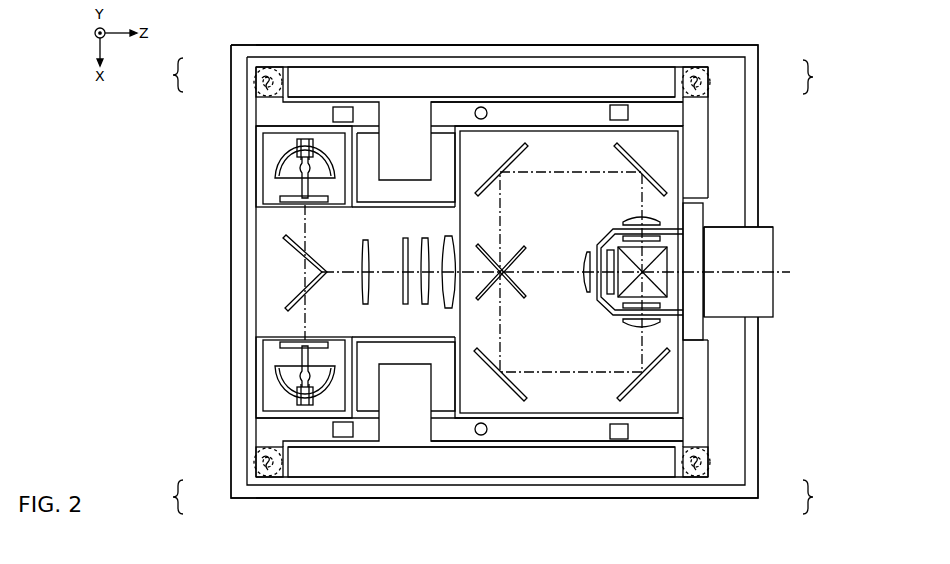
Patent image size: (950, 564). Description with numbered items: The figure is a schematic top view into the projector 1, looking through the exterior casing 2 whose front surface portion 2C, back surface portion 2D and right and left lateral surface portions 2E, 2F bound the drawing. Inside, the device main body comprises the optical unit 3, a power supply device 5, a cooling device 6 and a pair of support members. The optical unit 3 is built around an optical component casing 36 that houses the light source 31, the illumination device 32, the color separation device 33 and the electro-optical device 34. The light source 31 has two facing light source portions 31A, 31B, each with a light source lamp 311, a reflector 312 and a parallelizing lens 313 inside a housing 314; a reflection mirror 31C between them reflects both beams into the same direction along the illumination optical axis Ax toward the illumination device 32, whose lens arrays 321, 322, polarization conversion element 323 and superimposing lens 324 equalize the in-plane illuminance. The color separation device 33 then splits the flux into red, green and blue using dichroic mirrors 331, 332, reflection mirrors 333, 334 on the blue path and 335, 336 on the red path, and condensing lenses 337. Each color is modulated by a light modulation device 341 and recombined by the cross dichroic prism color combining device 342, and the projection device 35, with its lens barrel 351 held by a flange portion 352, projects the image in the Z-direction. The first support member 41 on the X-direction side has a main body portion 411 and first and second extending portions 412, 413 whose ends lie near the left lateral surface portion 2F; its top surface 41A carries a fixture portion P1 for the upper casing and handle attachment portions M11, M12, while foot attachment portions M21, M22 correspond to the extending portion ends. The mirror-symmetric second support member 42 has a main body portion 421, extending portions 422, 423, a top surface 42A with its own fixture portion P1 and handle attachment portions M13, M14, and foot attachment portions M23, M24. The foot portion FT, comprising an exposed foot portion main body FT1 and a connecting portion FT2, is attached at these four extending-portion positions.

The projector 1 is at (798, 36).
The exterior casing 2 is at (758, 148).
The front surface portion 2C is at (745, 165).
The back surface portion 2D is at (256, 150).
The right lateral surface portion 2E is at (583, 45).
The left lateral surface portion 2F is at (575, 500).
The optical unit 3 is at (690, 375).
The power supply device 5 is at (405, 67).
The cooling device 6 is at (405, 477).
The light source 31 is at (270, 251).
The light source portion 31A is at (186, 168).
The light source portion 31B is at (186, 308).
The reflection mirror 31C is at (284, 270).
The light source lamp 311 is at (280, 185).
The reflector 312 is at (280, 162).
The parallelizing lens 313 is at (283, 200).
The housing 314 is at (290, 218).
The illumination device 32 is at (358, 311).
The lens array 321 is at (365, 240).
The lens array 322 is at (405, 238).
The polarization conversion element 323 is at (435, 229).
The superimposing lens 324 is at (449, 236).
The color separation device 33 is at (572, 145).
The dichroic mirror 331 is at (510, 296).
The dichroic mirror 332 is at (501, 240).
The reflection mirror 333 is at (510, 392).
The reflection mirror 334 is at (630, 392).
The reflection mirror 335 is at (510, 158).
The reflection mirror 336 is at (632, 155).
The condensing lens 337 is at (637, 214).
The electro-optical device 34 is at (676, 300).
The light modulation device 341 is at (623, 238).
The color combining device 342 is at (690, 282).
The projection device 35 is at (827, 224).
The lens barrel 351 is at (770, 232).
The flange portion 352 is at (700, 255).
The optical component casing 36 is at (690, 170).
The first support member 41 is at (440, 440).
The main body portion 411 is at (508, 440).
The top surface 41A is at (548, 440).
The first extending portion 412 is at (690, 478).
The second extending portion 413 is at (268, 477).
The second support member 42 is at (440, 106).
The main body portion 421 is at (508, 107).
The top surface 42A is at (548, 107).
The first extending portion 422 is at (690, 70).
The second extending portion 423 is at (268, 70).
The fixture portion P1 is at (481, 107).
The attachment portion M11 is at (617, 440).
The attachment portion M12 is at (343, 438).
The attachment portion M13 is at (617, 105).
The attachment portion M14 is at (343, 107).
The attachment portion M21 is at (705, 462).
The attachment portion M22 is at (260, 462).
The attachment portion M23 is at (700, 92).
The attachment portion M24 is at (262, 96).
The foot portion FT is at (491, 286).
The foot portion main body FT1 is at (705, 78).
The connecting portion FT2 is at (708, 86).
The illumination optical axis Ax is at (783, 274).